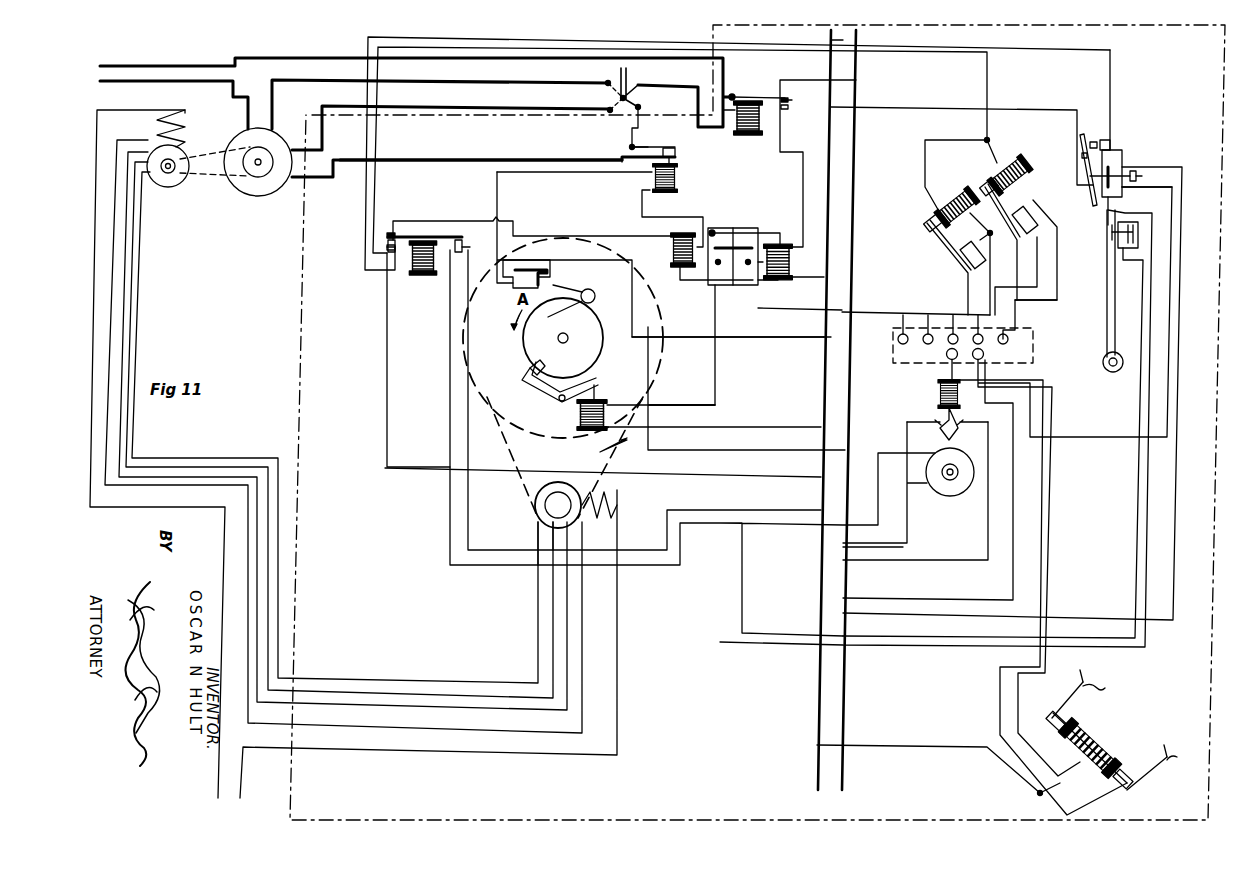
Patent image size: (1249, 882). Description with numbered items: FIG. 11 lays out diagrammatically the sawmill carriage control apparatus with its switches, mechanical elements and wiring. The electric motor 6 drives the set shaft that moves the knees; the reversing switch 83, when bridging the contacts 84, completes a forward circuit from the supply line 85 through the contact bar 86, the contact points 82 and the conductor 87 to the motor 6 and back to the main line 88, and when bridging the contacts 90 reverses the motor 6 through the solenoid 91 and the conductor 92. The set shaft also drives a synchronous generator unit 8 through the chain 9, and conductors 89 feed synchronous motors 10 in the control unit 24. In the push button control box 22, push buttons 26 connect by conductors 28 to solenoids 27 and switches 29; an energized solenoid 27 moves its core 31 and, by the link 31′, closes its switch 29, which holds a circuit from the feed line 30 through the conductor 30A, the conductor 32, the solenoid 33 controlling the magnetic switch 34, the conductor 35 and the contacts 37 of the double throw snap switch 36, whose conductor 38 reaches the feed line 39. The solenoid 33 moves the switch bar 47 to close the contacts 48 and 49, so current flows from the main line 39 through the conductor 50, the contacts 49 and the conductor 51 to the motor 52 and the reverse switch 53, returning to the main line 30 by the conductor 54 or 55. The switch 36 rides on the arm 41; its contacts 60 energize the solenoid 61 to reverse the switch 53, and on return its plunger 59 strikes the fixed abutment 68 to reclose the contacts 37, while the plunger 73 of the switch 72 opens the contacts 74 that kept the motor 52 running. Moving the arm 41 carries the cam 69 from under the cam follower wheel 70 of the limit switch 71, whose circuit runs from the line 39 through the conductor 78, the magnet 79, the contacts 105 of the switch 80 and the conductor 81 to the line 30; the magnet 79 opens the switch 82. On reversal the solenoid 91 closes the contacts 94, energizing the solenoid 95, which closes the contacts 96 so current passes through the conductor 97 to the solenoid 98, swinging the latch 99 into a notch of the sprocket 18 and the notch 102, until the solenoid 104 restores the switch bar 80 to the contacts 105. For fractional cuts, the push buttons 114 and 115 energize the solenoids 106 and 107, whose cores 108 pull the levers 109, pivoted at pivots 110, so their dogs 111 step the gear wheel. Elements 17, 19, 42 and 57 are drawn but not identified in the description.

The electric motor 6 is at (272, 148).
The synchronous electrical generator unit 8 is at (176, 187).
The chain 9 is at (214, 180).
The synchronous motors 10 is at (545, 515).
The belt 17 is at (490, 470).
The sprocket 18 is at (500, 408).
The wheel 19 is at (568, 338).
The push button control box 22 is at (900, 348).
The control unit 24 is at (306, 282).
The push buttons 26 is at (928, 333).
The solenoids 27 is at (947, 200).
The conductors 28 is at (1057, 297).
The switches 29 is at (982, 258).
The feed line 30 is at (856, 205).
The conductor 30A is at (935, 318).
The core 31 is at (930, 218).
The link 31′ is at (987, 188).
The conductor 32 is at (987, 96).
The solenoid 33 is at (425, 272).
The magnetic switch 34 is at (392, 270).
The conductor 35 is at (586, 43).
The double throw snap switch 36 is at (1115, 157).
The contacts 37 is at (1125, 167).
The conductor 38 is at (1030, 110).
The feed line 39 is at (828, 36).
The arm 41 is at (1112, 335).
The roller 42 is at (1113, 372).
The switch bar 47 is at (430, 236).
The electric contacts 48 is at (387, 247).
The contacts 49 is at (464, 248).
The conductor 50 is at (470, 318).
The conductor 51 is at (455, 400).
The motor 52 is at (945, 478).
The reverse switch 53 is at (945, 428).
The conductor 54 is at (905, 530).
The conductor 55 is at (940, 560).
The lever 57 is at (1088, 135).
The plunger 59 is at (1090, 176).
The contacts 60 is at (1125, 193).
The solenoid 61 is at (961, 395).
The fixed abutment 68 is at (1148, 177).
The cam 69 is at (556, 318).
The cam follower wheel 70 is at (588, 289).
The limit switch 71 is at (530, 266).
The switch 72 is at (1140, 238).
The plunger 73 is at (1112, 232).
The contacts 74 is at (1115, 240).
The conductor 78 is at (592, 260).
The magnet 79 is at (680, 182).
The switch 80 is at (716, 236).
The conductor 81 is at (816, 310).
The switch 82 is at (677, 153).
The reversing switch 83 is at (628, 92).
The contacts 84 is at (608, 84).
The supply line 85 is at (213, 67).
The contact bar 86 is at (645, 147).
The conductor 87 is at (462, 162).
The main line 88 is at (163, 65).
The conductors 89 is at (128, 350).
The contacts 90 is at (638, 87).
The solenoid 91 is at (765, 130).
The conductor 92 is at (733, 95).
The electric contacts 94 is at (789, 100).
The solenoid 95 is at (792, 262).
The contacts 96 is at (718, 265).
The conductor 97 is at (715, 380).
The solenoid 98 is at (588, 434).
The latch 99 is at (543, 393).
The notch 102 is at (535, 367).
The solenoid 104 is at (670, 253).
The contacts 105 is at (742, 248).
The solenoid 106 is at (1105, 760).
The solenoid 107 is at (1075, 740).
The cores 108 is at (1052, 724).
The levers 109 is at (1070, 698).
The pivot 110 is at (1082, 680).
The dogs 111 is at (1092, 690).
The push button 114 is at (946, 356).
The push button 115 is at (984, 356).